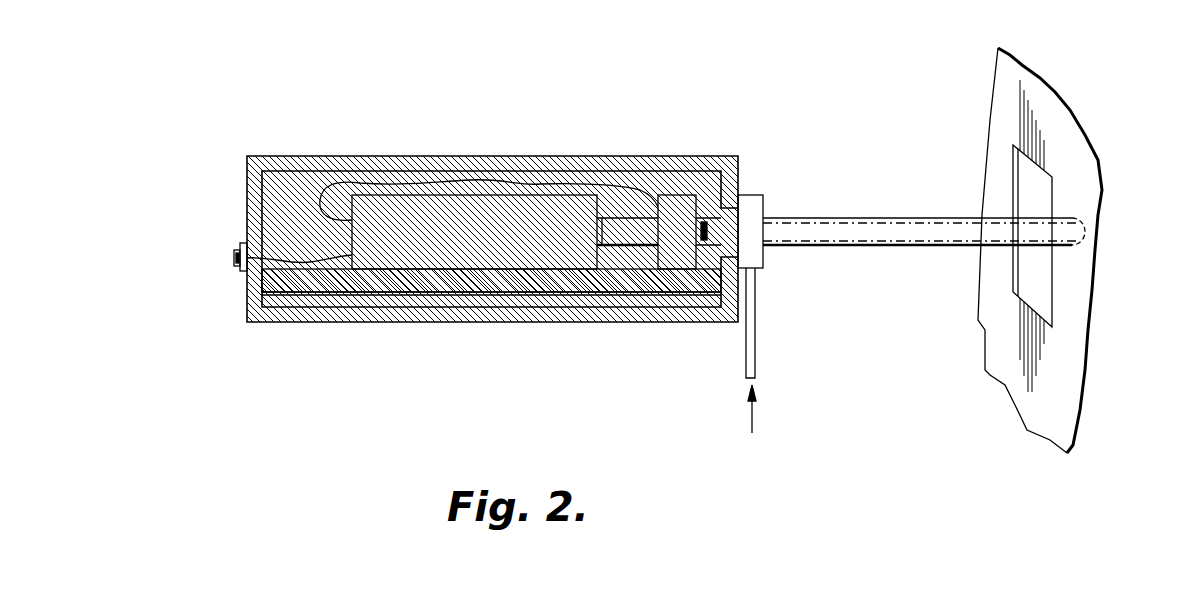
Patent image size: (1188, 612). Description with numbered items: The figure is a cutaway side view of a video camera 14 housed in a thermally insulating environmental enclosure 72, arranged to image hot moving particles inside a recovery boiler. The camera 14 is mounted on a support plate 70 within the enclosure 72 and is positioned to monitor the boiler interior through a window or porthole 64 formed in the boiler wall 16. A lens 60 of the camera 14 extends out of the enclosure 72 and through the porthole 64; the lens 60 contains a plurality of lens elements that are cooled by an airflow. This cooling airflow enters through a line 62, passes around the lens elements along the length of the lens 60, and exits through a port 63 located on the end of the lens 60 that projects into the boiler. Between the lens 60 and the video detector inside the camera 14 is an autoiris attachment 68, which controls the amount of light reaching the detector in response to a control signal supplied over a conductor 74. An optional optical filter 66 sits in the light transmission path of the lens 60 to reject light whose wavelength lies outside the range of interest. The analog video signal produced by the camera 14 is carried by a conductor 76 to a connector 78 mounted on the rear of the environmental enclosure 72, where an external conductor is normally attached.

The video camera 14 is at (430, 210).
The boiler wall 16 is at (1002, 100).
The lens 60 is at (961, 209).
The line 62 is at (756, 345).
The port 63 is at (1088, 226).
The porthole 64 is at (1033, 185).
The optical filter 66 is at (708, 232).
The autoiris attachment 68 is at (683, 194).
The support plate 70 is at (420, 292).
The environmental enclosure 72 is at (567, 313).
The conductor 74 is at (532, 183).
The conductor 76 is at (295, 262).
The connector 78 is at (237, 265).